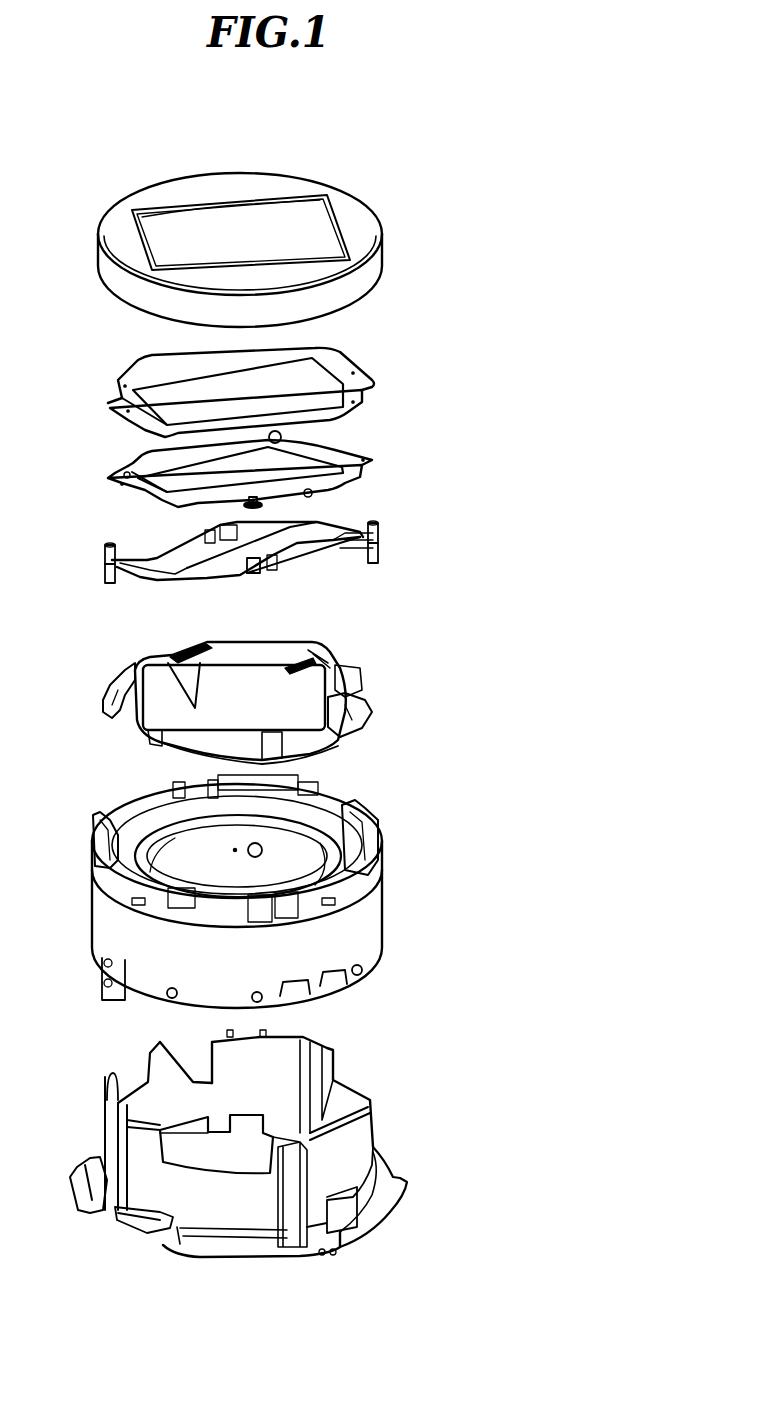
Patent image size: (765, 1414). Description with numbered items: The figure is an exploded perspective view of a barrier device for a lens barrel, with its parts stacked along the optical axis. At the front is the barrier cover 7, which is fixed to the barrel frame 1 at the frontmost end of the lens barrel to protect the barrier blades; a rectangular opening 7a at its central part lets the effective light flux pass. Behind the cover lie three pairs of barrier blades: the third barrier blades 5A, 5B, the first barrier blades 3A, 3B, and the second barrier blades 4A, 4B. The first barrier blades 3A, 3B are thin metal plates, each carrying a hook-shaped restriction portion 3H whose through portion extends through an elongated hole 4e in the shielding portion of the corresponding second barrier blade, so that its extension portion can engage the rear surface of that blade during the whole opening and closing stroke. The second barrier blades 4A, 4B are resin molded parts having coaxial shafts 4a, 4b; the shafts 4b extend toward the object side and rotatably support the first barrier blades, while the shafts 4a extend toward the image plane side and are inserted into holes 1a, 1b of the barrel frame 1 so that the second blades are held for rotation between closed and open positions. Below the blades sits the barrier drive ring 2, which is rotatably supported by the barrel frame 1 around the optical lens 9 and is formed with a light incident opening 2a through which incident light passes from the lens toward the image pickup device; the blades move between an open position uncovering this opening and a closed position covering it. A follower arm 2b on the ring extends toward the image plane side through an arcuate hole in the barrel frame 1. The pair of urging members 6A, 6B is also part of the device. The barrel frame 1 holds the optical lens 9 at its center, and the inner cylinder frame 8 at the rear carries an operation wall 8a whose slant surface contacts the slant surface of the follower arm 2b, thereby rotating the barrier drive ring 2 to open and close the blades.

The barrier cover 7 is at (355, 218).
The rectangular opening 7a is at (211, 211).
The third barrier blade 5A is at (348, 408).
The third barrier blade 5B is at (145, 372).
The first barrier blade 3A is at (333, 474).
The first barrier blade 3B is at (140, 466).
The restriction portion 3H is at (262, 508).
The second barrier blade 4A is at (303, 542).
The second barrier blade 4B is at (175, 557).
The shaft 4a is at (106, 578).
The shaft 4b is at (106, 550).
The elongated hole 4e is at (258, 571).
The barrier drive ring 2 is at (290, 655).
The light incident opening 2a is at (238, 674).
The follower arm 2b is at (180, 700).
The urging member 6A is at (108, 692).
The urging member 6B is at (362, 706).
The barrel frame 1 is at (363, 915).
The hole 1a is at (97, 870).
The hole 1b is at (373, 847).
The optical lens 9 is at (306, 845).
The inner cylinder frame 8 is at (350, 1147).
The operation wall 8a is at (187, 1045).